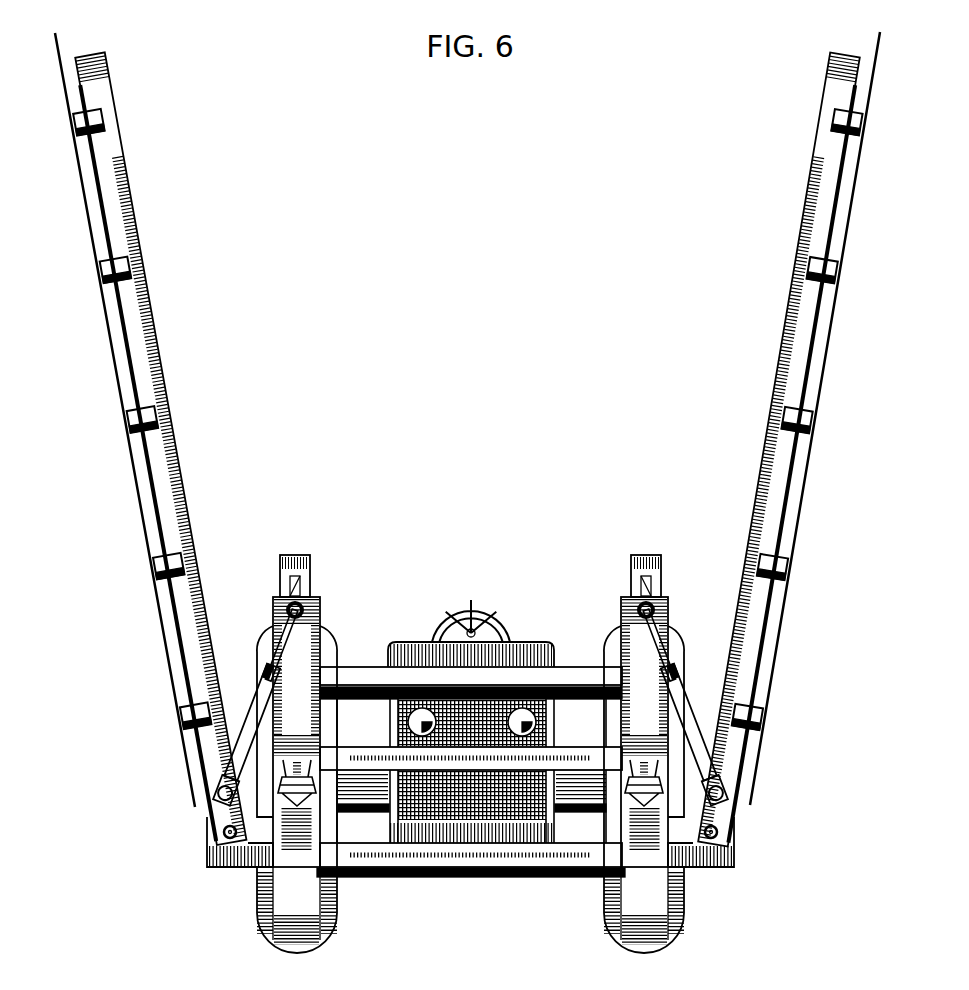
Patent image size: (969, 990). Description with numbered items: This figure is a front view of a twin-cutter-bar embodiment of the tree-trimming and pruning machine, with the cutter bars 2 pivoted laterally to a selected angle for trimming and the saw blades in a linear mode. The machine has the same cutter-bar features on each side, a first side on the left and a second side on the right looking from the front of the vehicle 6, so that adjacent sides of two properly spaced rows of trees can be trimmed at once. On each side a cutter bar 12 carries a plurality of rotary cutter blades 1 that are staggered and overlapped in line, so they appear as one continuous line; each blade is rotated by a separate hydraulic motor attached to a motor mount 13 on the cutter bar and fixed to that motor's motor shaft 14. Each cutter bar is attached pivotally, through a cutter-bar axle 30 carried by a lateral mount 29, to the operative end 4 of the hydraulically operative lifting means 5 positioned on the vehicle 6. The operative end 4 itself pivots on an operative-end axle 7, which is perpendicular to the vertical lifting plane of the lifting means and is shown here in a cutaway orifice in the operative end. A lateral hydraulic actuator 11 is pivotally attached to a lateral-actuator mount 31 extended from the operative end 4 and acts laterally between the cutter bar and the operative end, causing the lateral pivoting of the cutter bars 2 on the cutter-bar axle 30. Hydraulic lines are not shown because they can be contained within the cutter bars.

The rotary cutter blades 1 is at (138, 492).
The cutter bars 2 is at (152, 347).
The operative end 4 is at (400, 868).
The hydraulically operative lifting means 5 is at (294, 553).
The vehicle 6 is at (467, 832).
The operative-end axle 7 is at (297, 778).
The lateral hydraulic actuator 11 is at (248, 775).
The cutter bar 12 is at (150, 257).
The motor mount 13 is at (152, 412).
The motor shaft 14 is at (152, 572).
The lateral mount 29 is at (238, 858).
The cutter-bar axle 30 is at (208, 832).
The lateral-actuator mount 31 is at (320, 603).